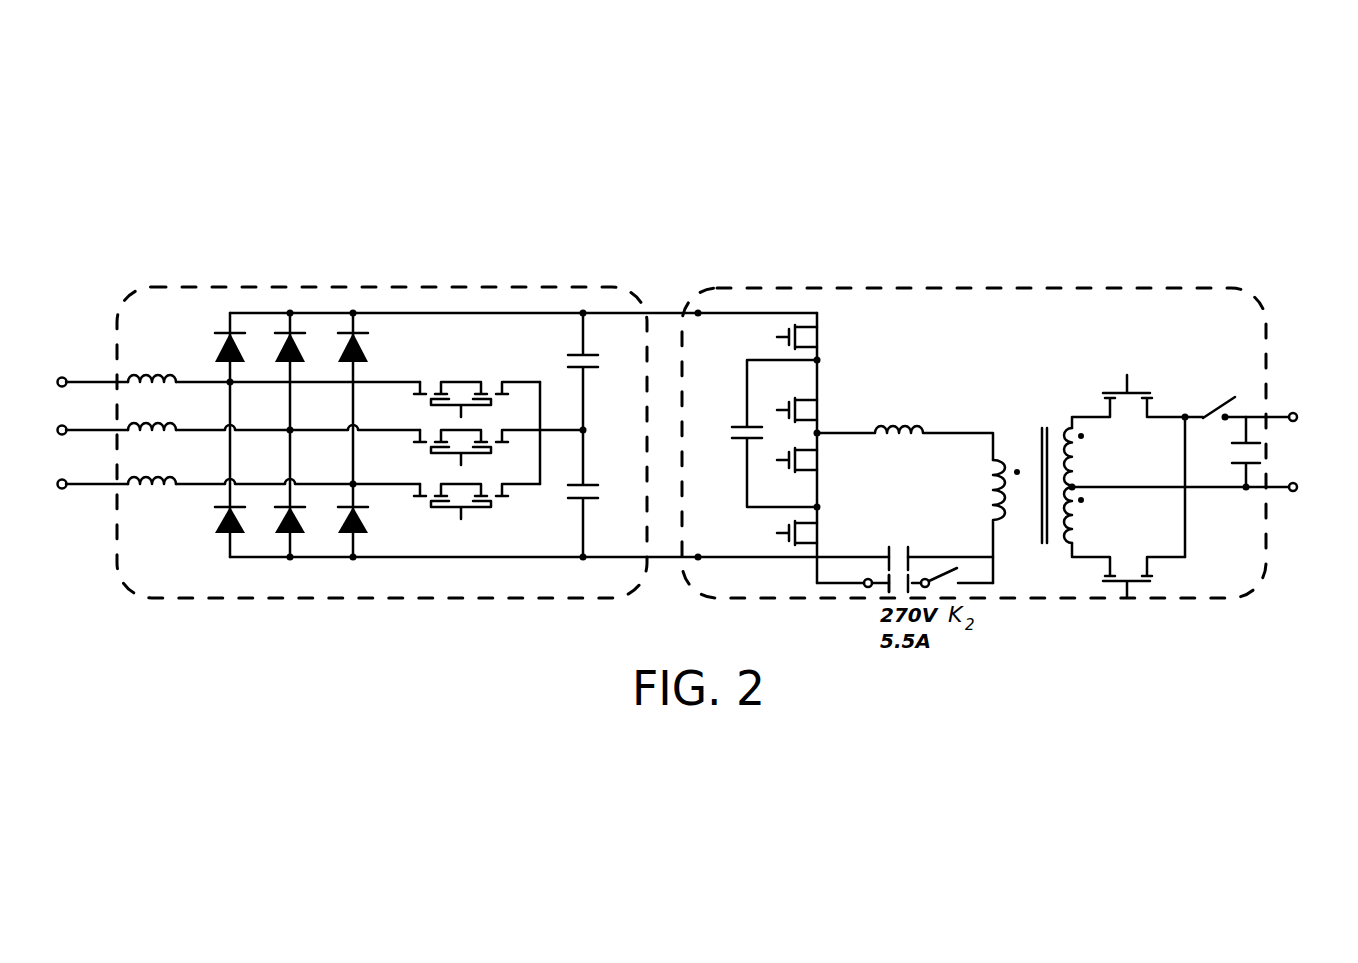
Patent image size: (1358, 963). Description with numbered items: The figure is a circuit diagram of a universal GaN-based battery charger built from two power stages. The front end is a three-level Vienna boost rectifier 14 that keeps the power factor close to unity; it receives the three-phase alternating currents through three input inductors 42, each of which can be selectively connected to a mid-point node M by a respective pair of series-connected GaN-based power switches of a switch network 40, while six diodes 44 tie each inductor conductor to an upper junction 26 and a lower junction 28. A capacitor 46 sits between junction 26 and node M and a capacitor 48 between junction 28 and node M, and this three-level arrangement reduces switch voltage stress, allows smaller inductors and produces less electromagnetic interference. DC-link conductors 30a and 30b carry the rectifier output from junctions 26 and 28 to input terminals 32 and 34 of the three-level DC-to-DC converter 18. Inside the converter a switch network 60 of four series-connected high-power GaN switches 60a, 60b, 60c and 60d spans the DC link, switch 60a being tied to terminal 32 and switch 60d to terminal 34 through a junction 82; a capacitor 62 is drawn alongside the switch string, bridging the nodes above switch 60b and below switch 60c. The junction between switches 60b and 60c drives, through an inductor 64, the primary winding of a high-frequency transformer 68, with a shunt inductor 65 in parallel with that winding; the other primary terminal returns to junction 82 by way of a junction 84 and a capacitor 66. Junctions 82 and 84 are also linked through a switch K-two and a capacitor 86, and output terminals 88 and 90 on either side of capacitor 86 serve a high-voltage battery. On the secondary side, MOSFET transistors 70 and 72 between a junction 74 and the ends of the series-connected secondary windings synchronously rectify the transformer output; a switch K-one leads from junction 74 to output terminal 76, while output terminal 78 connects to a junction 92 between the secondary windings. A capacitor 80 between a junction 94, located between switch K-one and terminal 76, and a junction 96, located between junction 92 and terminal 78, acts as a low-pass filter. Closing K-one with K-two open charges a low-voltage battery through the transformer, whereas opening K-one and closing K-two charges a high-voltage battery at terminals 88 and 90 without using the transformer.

The Vienna boost rectifier 14 is at (530, 280).
The DC-to-DC converter 18 is at (1130, 287).
The junction 26 is at (586, 310).
The junction 28 is at (580, 560).
The DC-link conductor 30a is at (656, 310).
The DC-link conductor 30b is at (657, 560).
The input terminal 32 is at (700, 316).
The input terminal 34 is at (700, 553).
The switch network 40 is at (482, 377).
The input inductors 42 is at (147, 503).
The diodes 44 is at (378, 349).
The capacitor 46 is at (572, 356).
The capacitor 48 is at (572, 500).
The switch network 60 is at (839, 406).
The GaN-based power switch 60a is at (823, 335).
The GaN-based power switch 60b is at (823, 403).
The GaN-based power switch 60c is at (823, 461).
The GaN-based power switch 60d is at (823, 526).
The flying capacitor 62 is at (741, 440).
The inductor 64 is at (906, 426).
The shunt inductor 65 is at (996, 490).
The capacitor 66 is at (887, 552).
The high-frequency transformer 68 is at (1044, 425).
The MOSFET transistor 70 is at (1126, 378).
The MOSFET transistor 72 is at (1130, 592).
The junction 74 is at (1185, 414).
The output terminal 76 is at (1293, 412).
The output terminal 78 is at (1293, 492).
The capacitor 80 is at (1241, 443).
The junction 82 is at (815, 562).
The junction 84 is at (996, 558).
The capacitor 86 is at (883, 588).
The output terminal 88 is at (864, 587).
The output terminal 90 is at (926, 578).
The junction 92 is at (1075, 485).
The junction 94 is at (1246, 414).
The junction 96 is at (1246, 491).